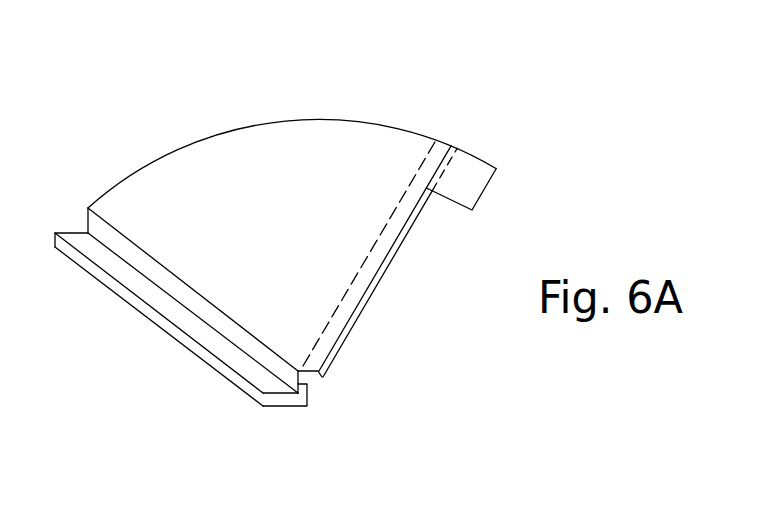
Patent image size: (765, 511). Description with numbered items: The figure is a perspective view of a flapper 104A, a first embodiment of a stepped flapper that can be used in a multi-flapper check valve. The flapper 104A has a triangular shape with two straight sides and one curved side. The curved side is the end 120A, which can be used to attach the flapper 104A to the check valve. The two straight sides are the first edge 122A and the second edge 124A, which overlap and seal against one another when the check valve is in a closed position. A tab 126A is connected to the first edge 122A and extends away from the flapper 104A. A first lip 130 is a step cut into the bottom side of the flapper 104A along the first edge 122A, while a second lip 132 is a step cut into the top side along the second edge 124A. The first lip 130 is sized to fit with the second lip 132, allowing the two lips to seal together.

The flapper 104A is at (155, 112).
The end 120A is at (298, 120).
The first edge 122A is at (363, 303).
The second edge 124A is at (207, 303).
The tab 126A is at (473, 181).
The first lip 130 is at (312, 392).
The second lip 132 is at (76, 232).